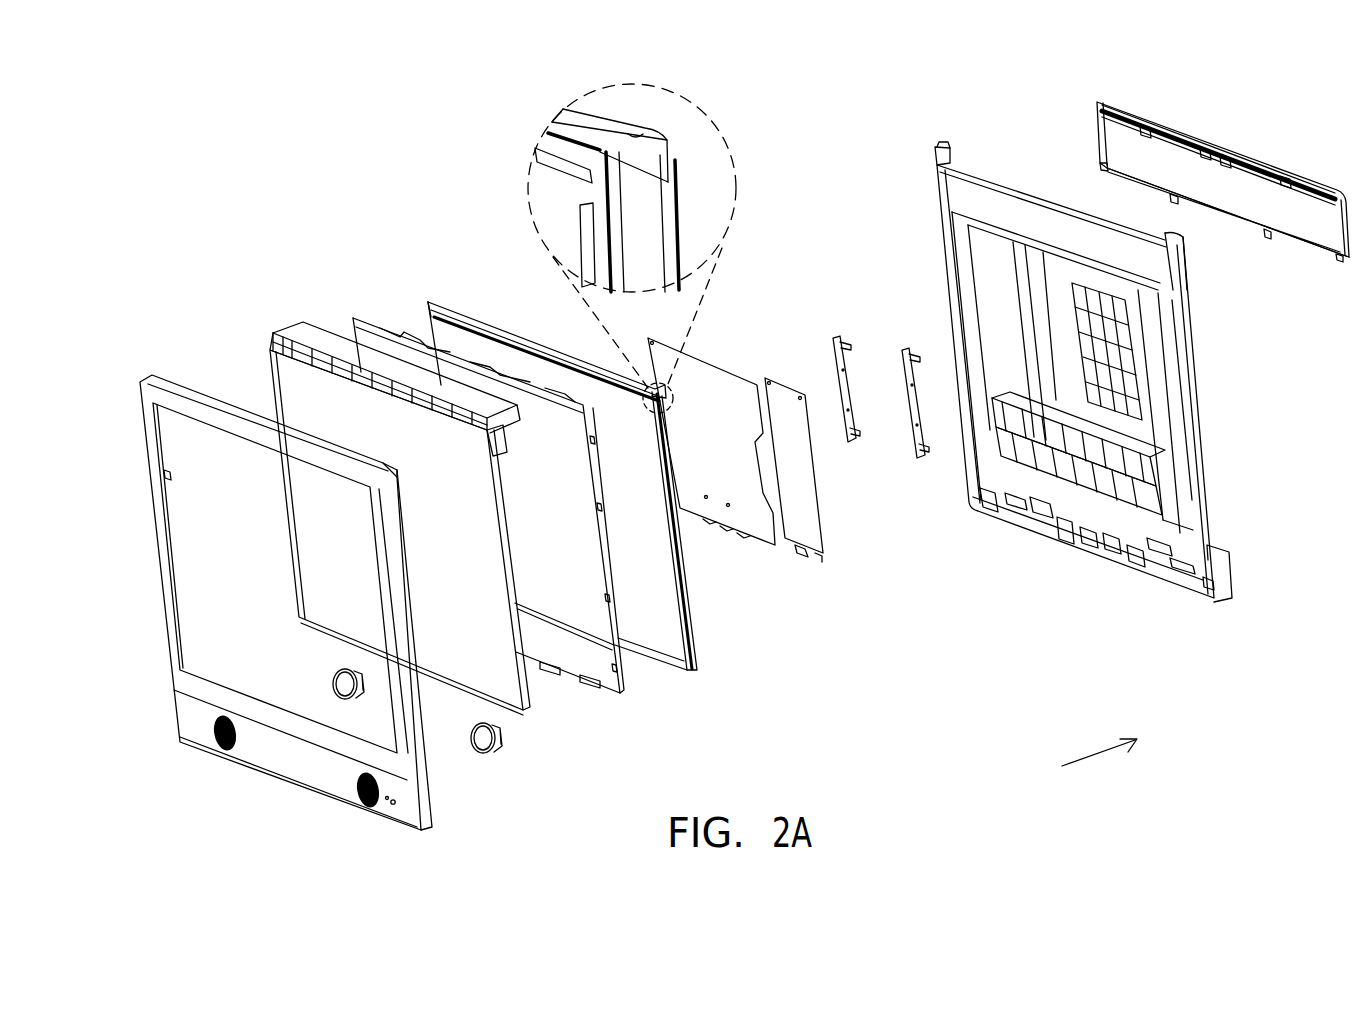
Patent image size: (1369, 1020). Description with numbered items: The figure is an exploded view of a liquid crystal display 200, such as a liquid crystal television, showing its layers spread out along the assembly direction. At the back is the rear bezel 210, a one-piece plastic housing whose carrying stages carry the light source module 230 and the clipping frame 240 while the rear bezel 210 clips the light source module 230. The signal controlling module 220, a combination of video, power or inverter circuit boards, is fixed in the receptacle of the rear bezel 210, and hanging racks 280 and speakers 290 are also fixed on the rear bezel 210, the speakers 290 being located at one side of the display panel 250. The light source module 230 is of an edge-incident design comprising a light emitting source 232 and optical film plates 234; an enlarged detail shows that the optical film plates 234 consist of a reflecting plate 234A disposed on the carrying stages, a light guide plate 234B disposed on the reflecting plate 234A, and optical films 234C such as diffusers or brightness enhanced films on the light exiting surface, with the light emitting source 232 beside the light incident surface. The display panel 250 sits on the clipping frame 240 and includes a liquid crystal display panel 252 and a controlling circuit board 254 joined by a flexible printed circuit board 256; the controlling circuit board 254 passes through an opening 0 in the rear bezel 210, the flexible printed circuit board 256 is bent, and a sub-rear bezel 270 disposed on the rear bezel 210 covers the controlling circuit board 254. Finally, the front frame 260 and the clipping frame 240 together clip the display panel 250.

The liquid crystal display 200 is at (1339, 761).
The rear bezel 210 is at (1232, 610).
The signal controlling module 220 is at (743, 522).
The light source module 230 is at (652, 423).
The light emitting source 232 is at (480, 310).
The optical film plates 234 is at (706, 200).
The reflecting plate 234A is at (680, 230).
The light guide plate 234B is at (640, 263).
The optical films 234C is at (613, 202).
The clipping frame 240 is at (618, 695).
The display panel 250 is at (368, 544).
The liquid crystal display panel 252 is at (290, 392).
The controlling circuit board 254 is at (317, 335).
The flexible printed circuit board 256 is at (282, 338).
The front frame 260 is at (322, 776).
The sub-rear bezel 270 is at (1297, 227).
The hanging racks 280 is at (917, 460).
The speakers 290 is at (503, 738).
The opening 0 is at (964, 165).